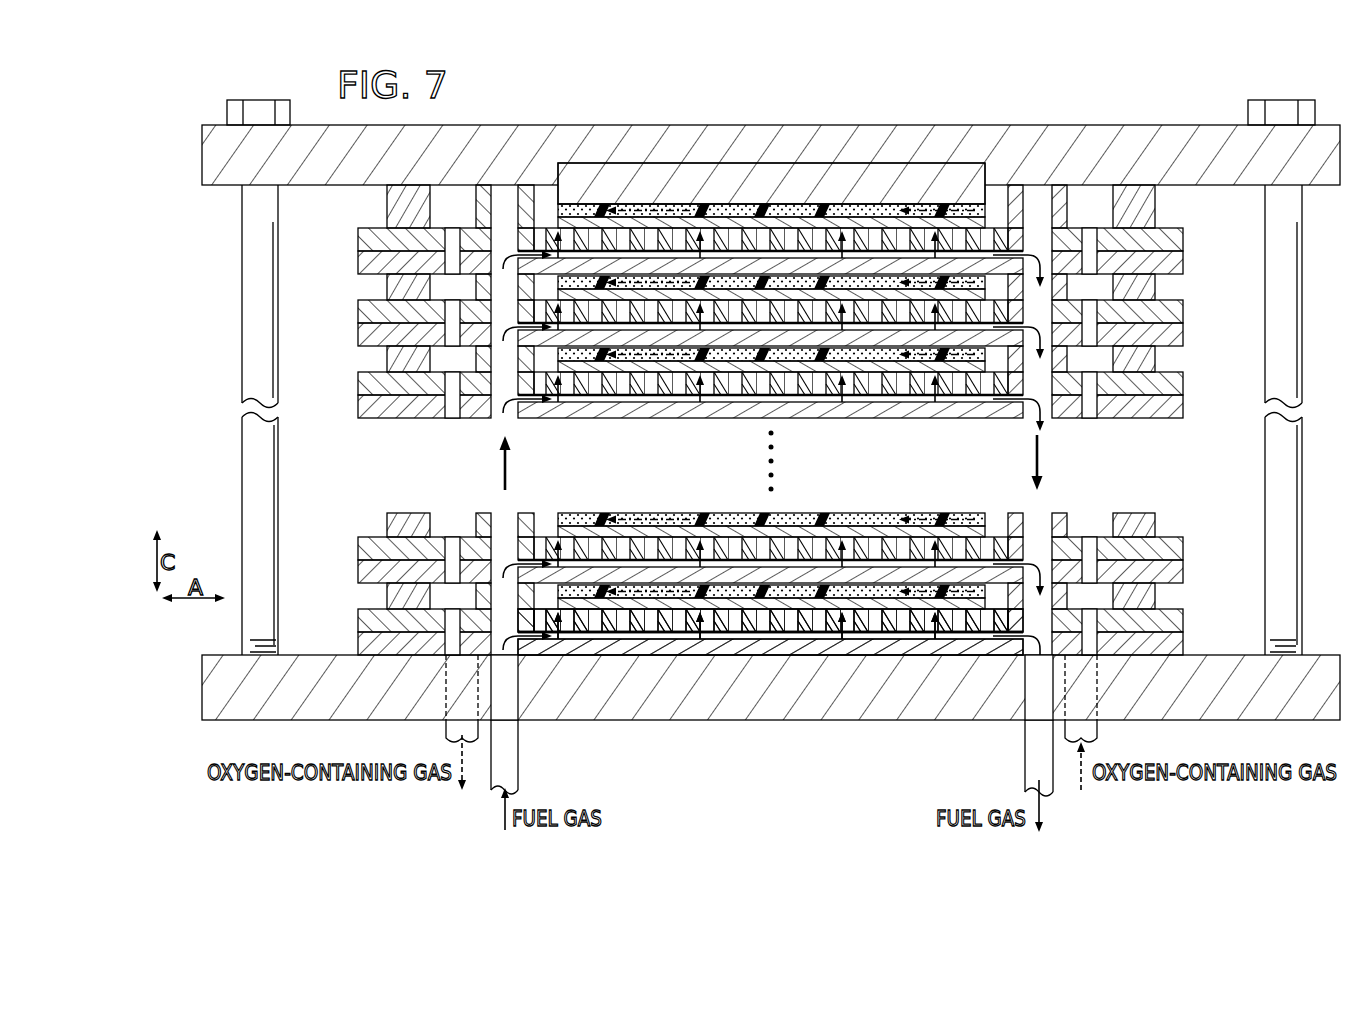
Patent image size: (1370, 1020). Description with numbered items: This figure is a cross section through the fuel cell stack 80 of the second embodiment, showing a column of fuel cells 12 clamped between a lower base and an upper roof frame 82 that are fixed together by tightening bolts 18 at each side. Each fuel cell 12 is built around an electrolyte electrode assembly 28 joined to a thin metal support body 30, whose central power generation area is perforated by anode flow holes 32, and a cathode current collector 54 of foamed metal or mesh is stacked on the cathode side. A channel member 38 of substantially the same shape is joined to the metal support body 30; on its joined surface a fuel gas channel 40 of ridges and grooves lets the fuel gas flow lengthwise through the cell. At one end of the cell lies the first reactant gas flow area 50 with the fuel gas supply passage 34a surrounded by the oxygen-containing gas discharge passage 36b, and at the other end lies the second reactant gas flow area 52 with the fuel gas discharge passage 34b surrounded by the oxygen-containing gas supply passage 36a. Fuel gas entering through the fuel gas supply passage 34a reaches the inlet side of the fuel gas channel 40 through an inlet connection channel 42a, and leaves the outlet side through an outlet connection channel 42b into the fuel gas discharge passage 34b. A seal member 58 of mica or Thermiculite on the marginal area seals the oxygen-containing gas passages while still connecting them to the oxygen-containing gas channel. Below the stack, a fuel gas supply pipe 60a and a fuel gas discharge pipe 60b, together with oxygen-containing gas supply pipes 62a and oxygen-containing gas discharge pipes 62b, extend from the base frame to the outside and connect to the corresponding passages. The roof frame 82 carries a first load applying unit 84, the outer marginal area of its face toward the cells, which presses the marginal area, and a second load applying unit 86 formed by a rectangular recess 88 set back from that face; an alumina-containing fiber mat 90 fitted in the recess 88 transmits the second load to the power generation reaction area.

The fuel cell 12 is at (1199, 234).
The tightening bolt 18 is at (1286, 104).
The electrolyte electrode assembly 28 is at (822, 602).
The metal support body 30 is at (856, 598).
The anode flow holes 32 is at (606, 620).
The fuel gas supply passage 34a is at (507, 540).
The fuel gas discharge passage 34b is at (1036, 540).
The oxygen-containing gas supply passage 36a is at (1090, 545).
The oxygen-containing gas discharge passage 36b is at (453, 545).
The channel member 38 is at (900, 652).
The fuel gas channel 40 is at (677, 638).
The inlet connection channel 42a is at (533, 638).
The outlet connection channel 42b is at (1014, 640).
The first reactant gas flow area 50 is at (424, 469).
The second reactant gas flow area 52 is at (1119, 470).
The cathode current collector 54 is at (812, 514).
The seal member 58 is at (1135, 520).
The fuel gas supply pipe 60a is at (513, 757).
The fuel gas discharge pipe 60b is at (1030, 762).
The oxygen-containing gas supply pipe 62a is at (1096, 738).
The oxygen-containing gas discharge pipe 62b is at (447, 738).
The fuel cell stack 80 is at (771, 92).
The roof frame 82 is at (1181, 118).
The first load applying unit 84 is at (350, 186).
The second load applying unit 86 is at (977, 152).
The recess 88 is at (915, 170).
The fiber mat 90 is at (797, 178).